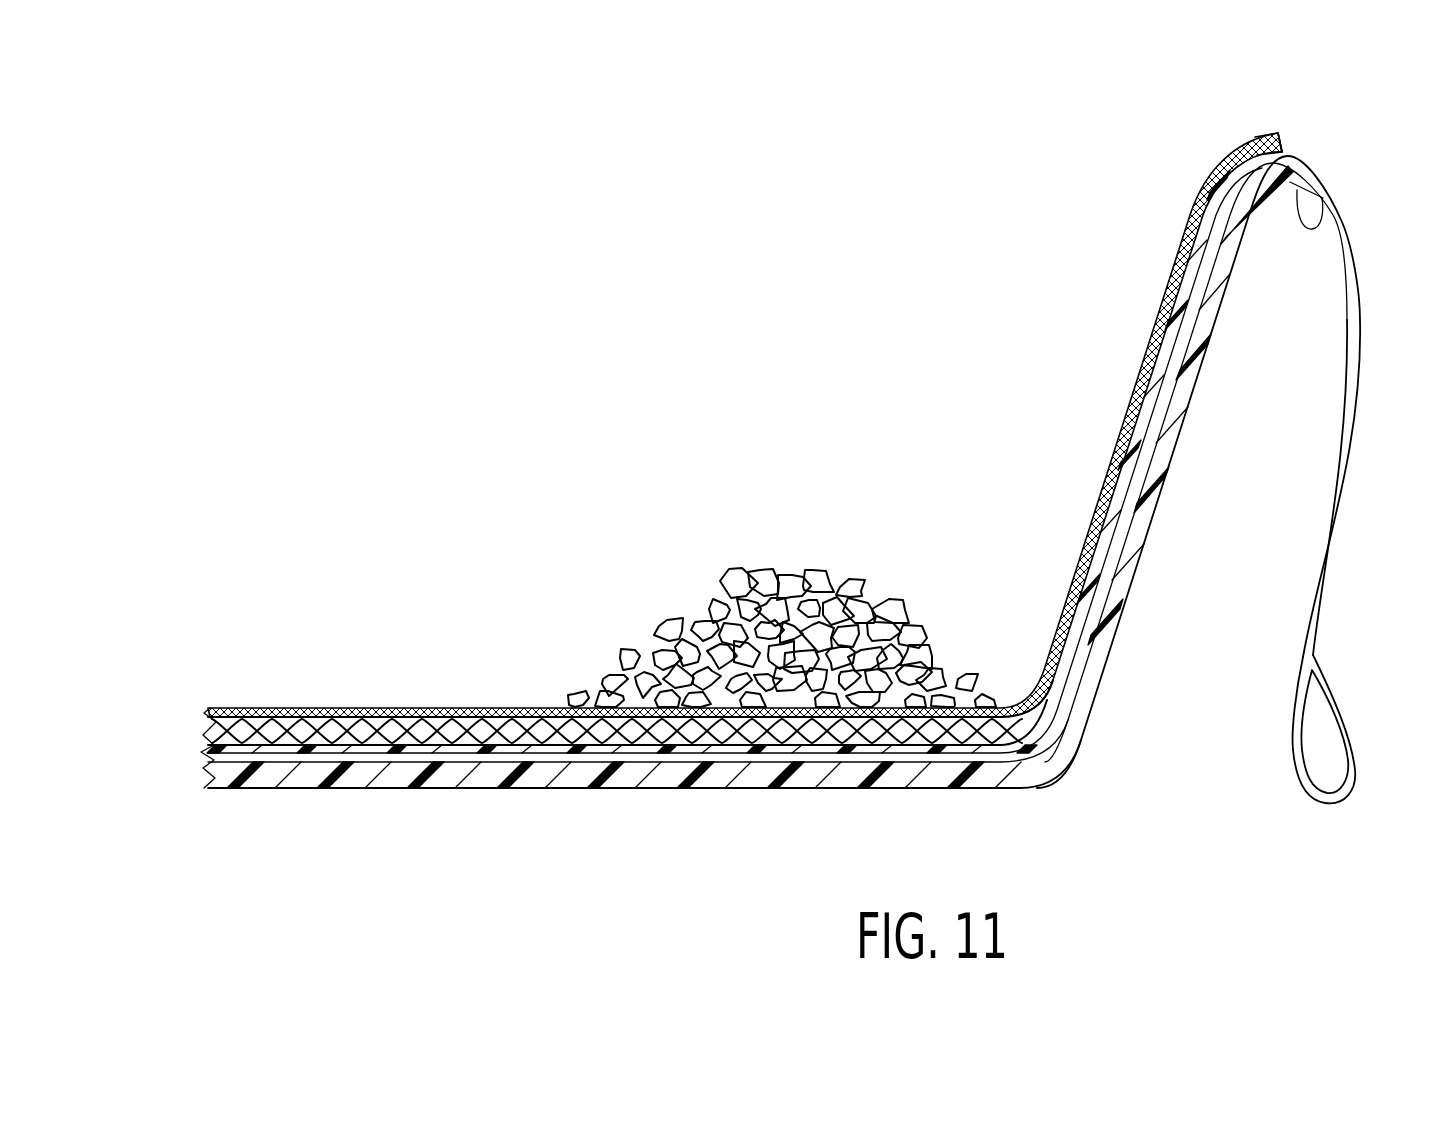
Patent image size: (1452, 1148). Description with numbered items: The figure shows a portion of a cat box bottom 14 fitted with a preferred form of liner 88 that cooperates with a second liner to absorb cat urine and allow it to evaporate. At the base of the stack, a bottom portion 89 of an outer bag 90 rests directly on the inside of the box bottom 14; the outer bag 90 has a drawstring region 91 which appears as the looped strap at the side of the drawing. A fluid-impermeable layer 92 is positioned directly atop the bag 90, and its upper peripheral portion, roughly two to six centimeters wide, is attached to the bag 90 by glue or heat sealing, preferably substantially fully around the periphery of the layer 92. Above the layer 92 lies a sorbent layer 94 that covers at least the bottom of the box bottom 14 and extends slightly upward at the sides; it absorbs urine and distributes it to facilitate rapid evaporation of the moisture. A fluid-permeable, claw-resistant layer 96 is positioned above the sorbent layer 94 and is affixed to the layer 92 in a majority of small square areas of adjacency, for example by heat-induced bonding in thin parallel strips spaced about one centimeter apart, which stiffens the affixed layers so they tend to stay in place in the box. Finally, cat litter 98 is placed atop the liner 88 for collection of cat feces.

The liner 88 is at (1051, 232).
The fluid-impermeable layer 92 is at (1283, 153).
The cat box bottom 14 is at (1147, 537).
The outer bag 90 is at (1325, 570).
The drawstring region 91 is at (1320, 708).
The bottom portion 89 is at (1062, 730).
The sorbent layer 94 is at (364, 708).
The fluid-permeable, claw-resistant layer 96 is at (445, 708).
The cat litter 98 is at (815, 600).